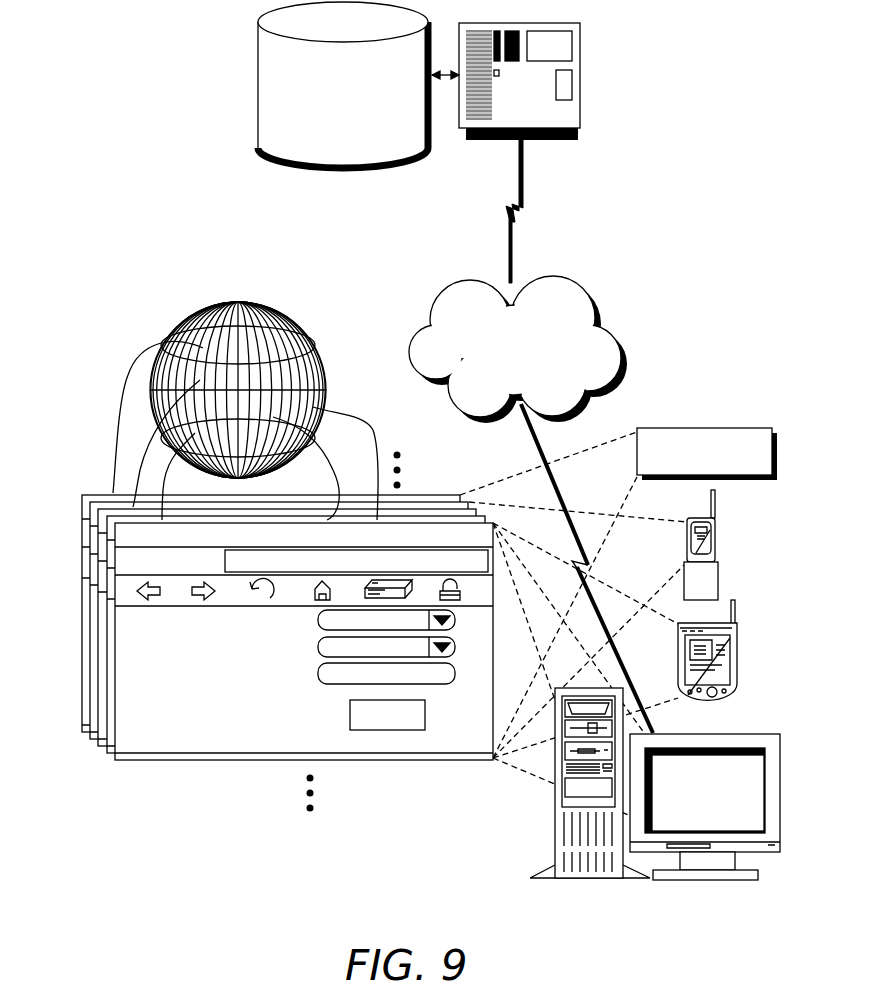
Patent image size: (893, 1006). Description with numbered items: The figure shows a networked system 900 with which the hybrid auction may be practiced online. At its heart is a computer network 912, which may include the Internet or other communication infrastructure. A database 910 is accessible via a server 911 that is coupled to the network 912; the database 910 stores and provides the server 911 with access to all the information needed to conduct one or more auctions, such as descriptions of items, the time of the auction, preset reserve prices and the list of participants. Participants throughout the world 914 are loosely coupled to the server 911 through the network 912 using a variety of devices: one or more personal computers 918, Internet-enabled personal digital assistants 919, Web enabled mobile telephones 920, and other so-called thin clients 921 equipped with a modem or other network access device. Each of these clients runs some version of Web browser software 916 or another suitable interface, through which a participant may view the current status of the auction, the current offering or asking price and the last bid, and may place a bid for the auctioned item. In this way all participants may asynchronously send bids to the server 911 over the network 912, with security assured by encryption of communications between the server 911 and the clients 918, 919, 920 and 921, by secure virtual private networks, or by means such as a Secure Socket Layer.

The system 900 is at (99, 272).
The database 910 is at (272, 153).
The server 911 is at (567, 140).
The computer network 912 is at (482, 416).
The world 914 is at (307, 323).
The Web browser software 916 is at (82, 598).
The personal computer 918 is at (555, 803).
The personal digital assistant 919 is at (678, 652).
The Web enabled mobile telephone 920 is at (685, 537).
The thin client 921 is at (637, 440).